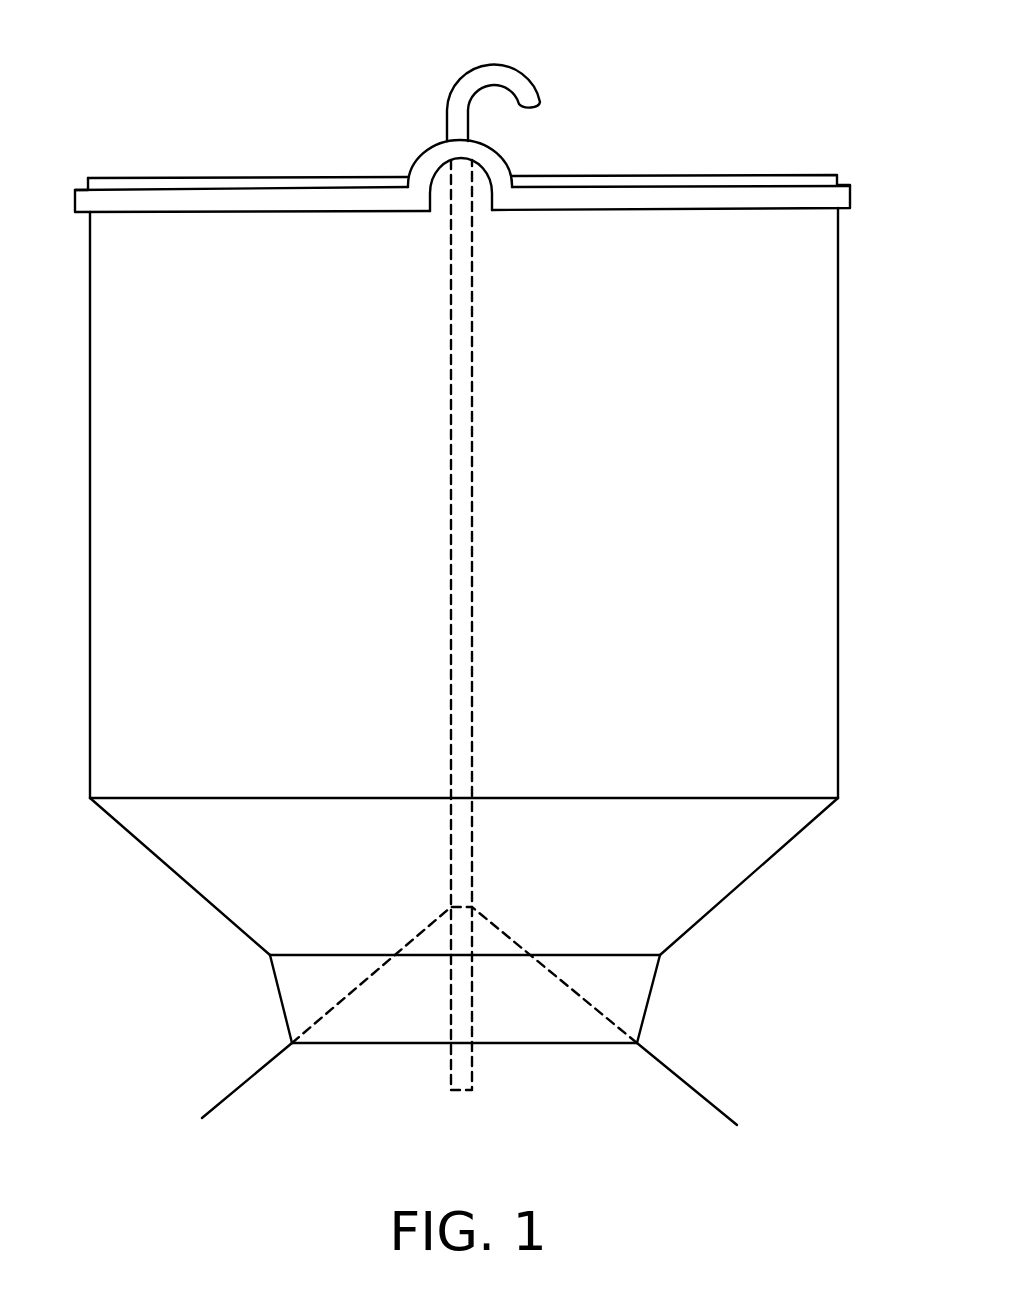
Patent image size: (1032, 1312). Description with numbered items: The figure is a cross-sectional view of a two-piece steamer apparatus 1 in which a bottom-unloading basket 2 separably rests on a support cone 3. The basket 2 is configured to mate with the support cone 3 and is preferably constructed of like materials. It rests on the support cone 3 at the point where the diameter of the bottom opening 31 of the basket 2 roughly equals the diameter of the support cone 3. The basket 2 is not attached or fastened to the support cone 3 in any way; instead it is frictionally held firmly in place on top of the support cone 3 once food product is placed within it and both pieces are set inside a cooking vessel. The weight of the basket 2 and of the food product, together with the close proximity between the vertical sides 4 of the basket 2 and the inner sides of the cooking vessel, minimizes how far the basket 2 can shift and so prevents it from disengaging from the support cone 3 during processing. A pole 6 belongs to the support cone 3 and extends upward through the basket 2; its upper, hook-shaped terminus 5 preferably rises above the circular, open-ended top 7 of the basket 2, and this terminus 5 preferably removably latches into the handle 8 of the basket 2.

The two-piece steamer apparatus 1 is at (100, 177).
The bottom-unloading basket 2 is at (88, 656).
The support cone 3 is at (250, 1077).
The vertical sides 4 is at (88, 395).
The hook-shaped terminus 5 is at (455, 80).
The pole 6 is at (481, 423).
The open-ended top 7 is at (392, 203).
The handle 8 is at (418, 144).
The bottom opening 31 is at (436, 1041).